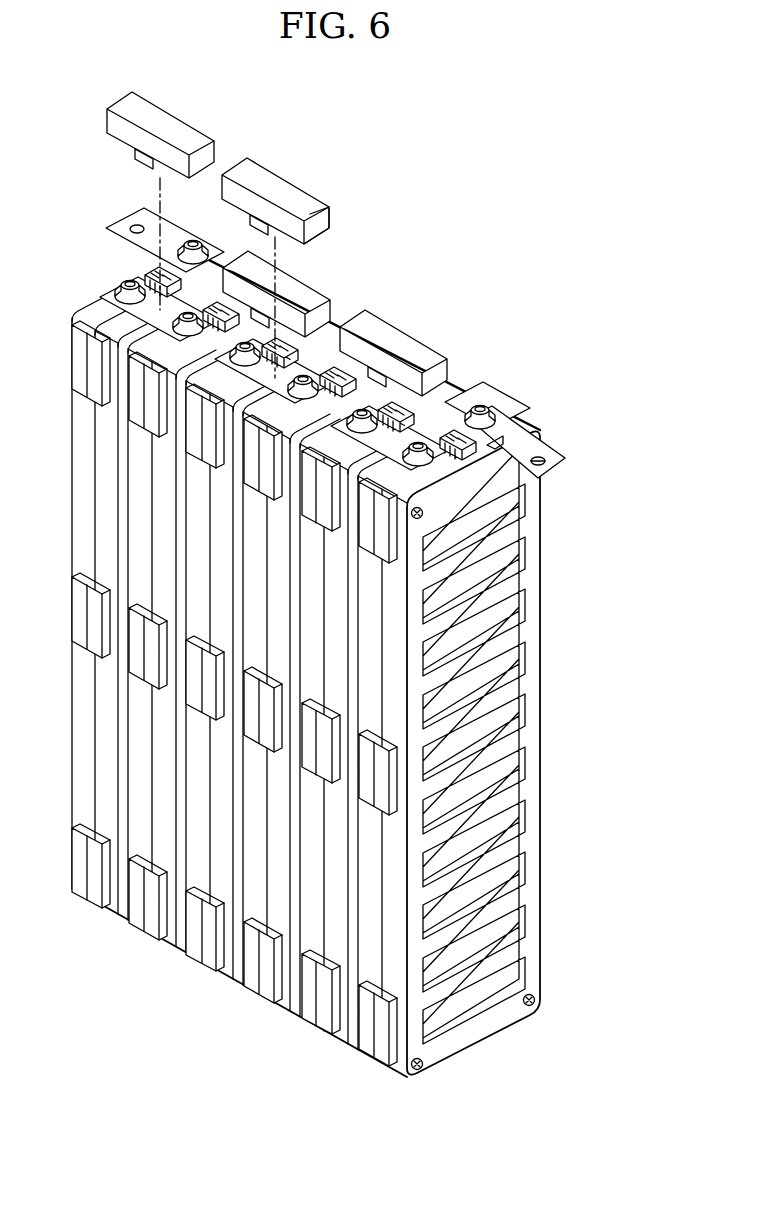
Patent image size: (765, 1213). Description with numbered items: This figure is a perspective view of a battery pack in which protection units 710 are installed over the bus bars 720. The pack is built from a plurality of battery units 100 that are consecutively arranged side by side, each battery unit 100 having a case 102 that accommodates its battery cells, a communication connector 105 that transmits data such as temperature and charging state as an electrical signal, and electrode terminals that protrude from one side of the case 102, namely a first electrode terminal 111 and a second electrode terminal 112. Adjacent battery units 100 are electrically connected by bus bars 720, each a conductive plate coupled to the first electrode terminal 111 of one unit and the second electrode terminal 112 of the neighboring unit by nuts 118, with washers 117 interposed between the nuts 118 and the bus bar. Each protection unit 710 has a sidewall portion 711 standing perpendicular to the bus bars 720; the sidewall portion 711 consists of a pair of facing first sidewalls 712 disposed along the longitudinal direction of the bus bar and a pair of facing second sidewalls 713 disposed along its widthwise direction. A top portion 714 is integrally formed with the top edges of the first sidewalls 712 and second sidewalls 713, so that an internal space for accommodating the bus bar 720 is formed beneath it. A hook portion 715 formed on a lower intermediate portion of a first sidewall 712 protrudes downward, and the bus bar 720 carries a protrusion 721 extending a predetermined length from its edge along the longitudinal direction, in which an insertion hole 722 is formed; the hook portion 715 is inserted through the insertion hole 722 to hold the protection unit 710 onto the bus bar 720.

The battery unit 100 is at (351, 642).
The case 102 is at (533, 624).
The communication connector 105 is at (339, 366).
The first electrode terminal 111 is at (452, 370).
The second electrode terminal 112 is at (417, 450).
The washer 117 is at (500, 423).
The nut 118 is at (497, 410).
The protection unit 710 is at (275, 171).
The sidewall portion 711 is at (282, 171).
The first sidewall 712 is at (260, 207).
The second sidewall 713 is at (313, 223).
The top portion 714 is at (243, 168).
The hook portion 715 is at (252, 218).
The bus bar 720 is at (538, 448).
The protrusion 721 is at (532, 450).
The insertion hole 722 is at (530, 442).